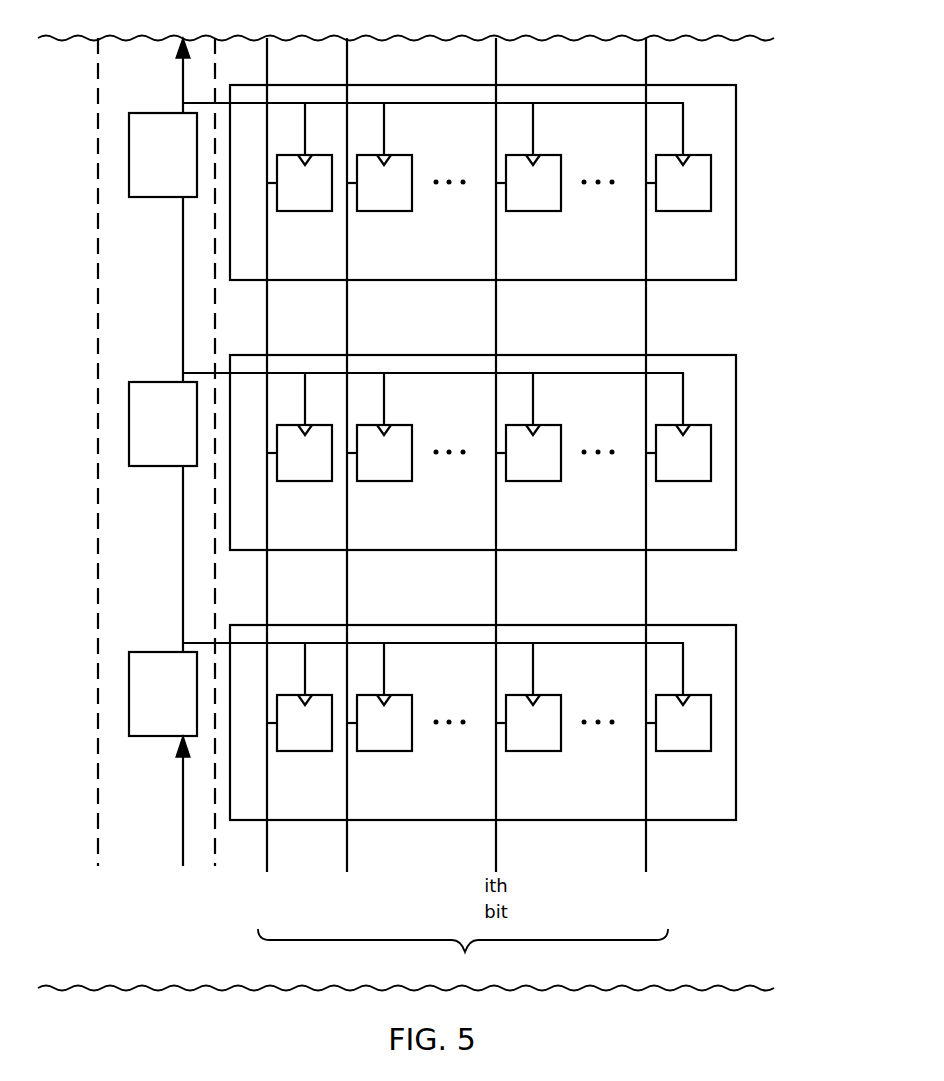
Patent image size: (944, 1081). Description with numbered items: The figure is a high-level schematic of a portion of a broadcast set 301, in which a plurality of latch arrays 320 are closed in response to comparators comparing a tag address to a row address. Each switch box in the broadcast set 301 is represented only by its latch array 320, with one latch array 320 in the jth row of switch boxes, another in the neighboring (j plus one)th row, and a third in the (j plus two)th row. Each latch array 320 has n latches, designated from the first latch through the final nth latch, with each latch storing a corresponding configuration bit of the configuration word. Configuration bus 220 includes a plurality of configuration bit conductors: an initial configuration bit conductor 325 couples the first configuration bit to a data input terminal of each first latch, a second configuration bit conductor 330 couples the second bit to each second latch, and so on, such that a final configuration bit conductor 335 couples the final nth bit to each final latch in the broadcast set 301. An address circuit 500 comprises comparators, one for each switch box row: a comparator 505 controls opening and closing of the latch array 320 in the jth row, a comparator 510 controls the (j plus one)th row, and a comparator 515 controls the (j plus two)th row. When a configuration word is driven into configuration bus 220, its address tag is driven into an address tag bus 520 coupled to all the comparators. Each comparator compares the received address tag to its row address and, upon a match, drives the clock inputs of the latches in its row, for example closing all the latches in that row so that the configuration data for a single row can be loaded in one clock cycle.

The broadcast set 301 is at (781, 73).
The latch array 320 is at (737, 111).
The initial configuration bit conductor 325 is at (268, 840).
The second configuration bit conductor 330 is at (348, 840).
The final configuration bit conductor 335 is at (647, 840).
The configuration bus 220 is at (463, 955).
The address circuit 500 is at (98, 630).
The comparator 505 is at (151, 652).
The comparator 510 is at (151, 382).
The comparator 515 is at (151, 113).
The address tag bus 520 is at (183, 797).